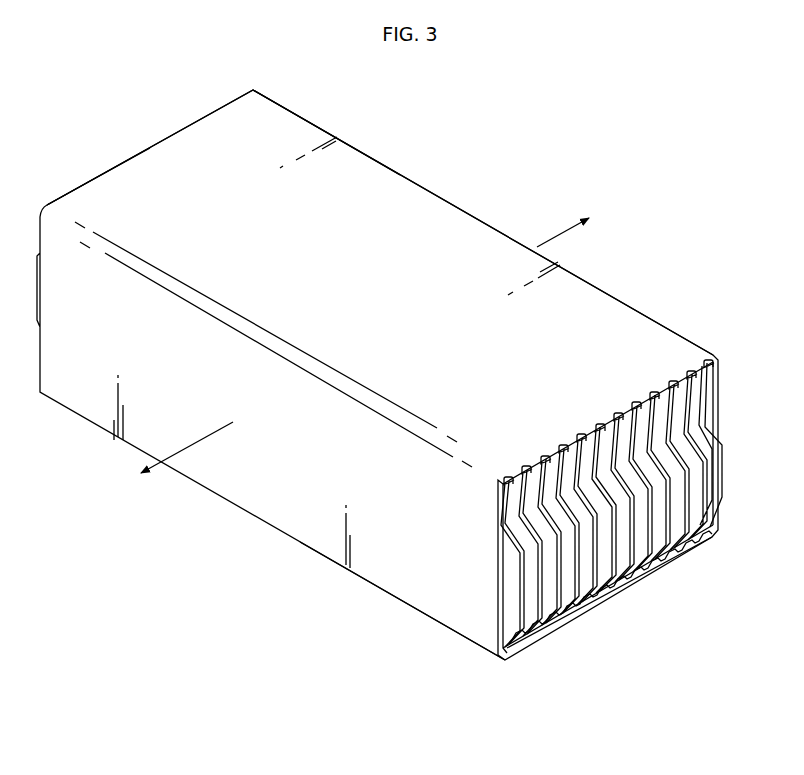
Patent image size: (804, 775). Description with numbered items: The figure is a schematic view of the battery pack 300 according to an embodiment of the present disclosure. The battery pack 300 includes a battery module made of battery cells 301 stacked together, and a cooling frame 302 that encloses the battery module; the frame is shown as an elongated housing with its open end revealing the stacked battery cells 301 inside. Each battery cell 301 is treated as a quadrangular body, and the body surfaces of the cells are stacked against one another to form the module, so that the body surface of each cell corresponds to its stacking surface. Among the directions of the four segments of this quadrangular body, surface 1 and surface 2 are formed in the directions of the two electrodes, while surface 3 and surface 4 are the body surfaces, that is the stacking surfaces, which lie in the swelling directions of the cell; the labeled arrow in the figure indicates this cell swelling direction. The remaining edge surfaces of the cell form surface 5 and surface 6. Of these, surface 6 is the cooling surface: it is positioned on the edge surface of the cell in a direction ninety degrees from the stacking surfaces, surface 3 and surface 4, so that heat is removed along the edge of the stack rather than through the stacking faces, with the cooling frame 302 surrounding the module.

The battery pack 300 is at (516, 153).
The battery cell 301 is at (510, 603).
The cooling frame 302 is at (408, 205).
The surface ① 1 is at (705, 445).
The surface ② 2 is at (110, 168).
The surface ③ 3 is at (172, 459).
The surface ④ 4 is at (633, 213).
The surface ⑤ 5 is at (332, 205).
The surface ⑥ 6 is at (420, 610).